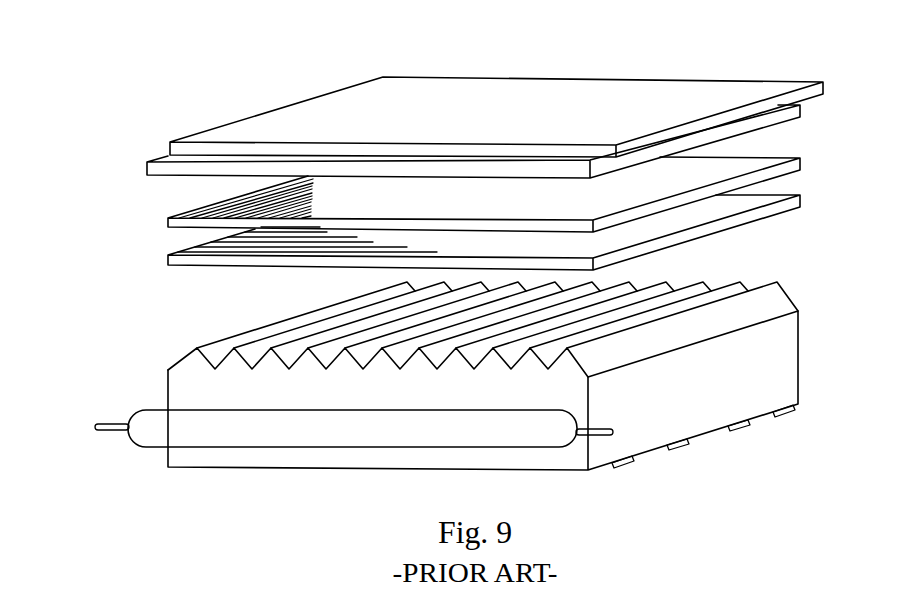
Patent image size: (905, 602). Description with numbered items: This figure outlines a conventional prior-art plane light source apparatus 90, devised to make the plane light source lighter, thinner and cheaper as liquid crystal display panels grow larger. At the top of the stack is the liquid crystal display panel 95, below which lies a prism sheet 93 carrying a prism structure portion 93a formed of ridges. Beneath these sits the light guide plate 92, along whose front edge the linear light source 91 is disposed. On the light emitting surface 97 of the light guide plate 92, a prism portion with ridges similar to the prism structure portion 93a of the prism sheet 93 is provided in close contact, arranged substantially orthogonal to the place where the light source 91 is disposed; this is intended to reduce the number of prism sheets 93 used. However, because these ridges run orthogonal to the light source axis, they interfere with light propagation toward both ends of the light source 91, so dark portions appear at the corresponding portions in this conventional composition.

The plane light source apparatus 90 is at (705, 66).
The liquid crystal display panel 95 is at (348, 108).
The prism sheet 93 is at (753, 202).
The prism structure portion 93a is at (207, 247).
The light emitting surface 97 is at (752, 275).
The light guide plate 92 is at (390, 458).
The light source 91 is at (241, 433).